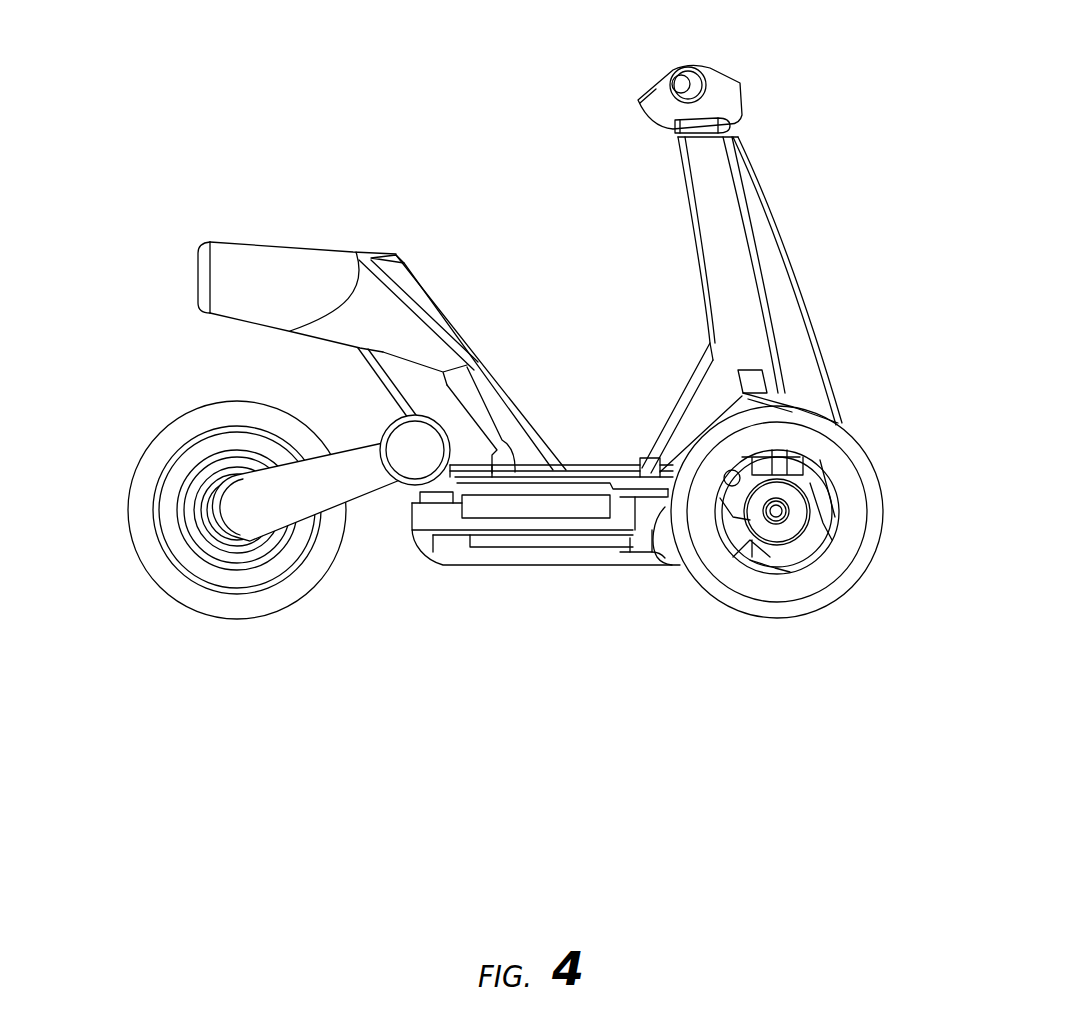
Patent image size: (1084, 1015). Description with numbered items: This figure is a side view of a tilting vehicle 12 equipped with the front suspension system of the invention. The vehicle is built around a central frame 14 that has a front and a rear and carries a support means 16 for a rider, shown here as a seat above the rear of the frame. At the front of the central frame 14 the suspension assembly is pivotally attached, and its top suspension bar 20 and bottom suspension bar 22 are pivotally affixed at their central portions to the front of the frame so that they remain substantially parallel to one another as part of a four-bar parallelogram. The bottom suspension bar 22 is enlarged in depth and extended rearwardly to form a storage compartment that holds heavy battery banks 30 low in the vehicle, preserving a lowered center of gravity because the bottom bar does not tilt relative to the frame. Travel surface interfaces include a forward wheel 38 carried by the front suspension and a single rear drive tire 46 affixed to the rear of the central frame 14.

The tilting vehicle 12 is at (794, 119).
The central frame 14 is at (765, 228).
The support means 16 is at (278, 243).
The top suspension bar 20 is at (770, 400).
The bottom suspension bar 22 is at (630, 568).
The battery banks 30 is at (513, 510).
The forward wheel 38 is at (878, 557).
The rear drive tire 46 is at (237, 504).